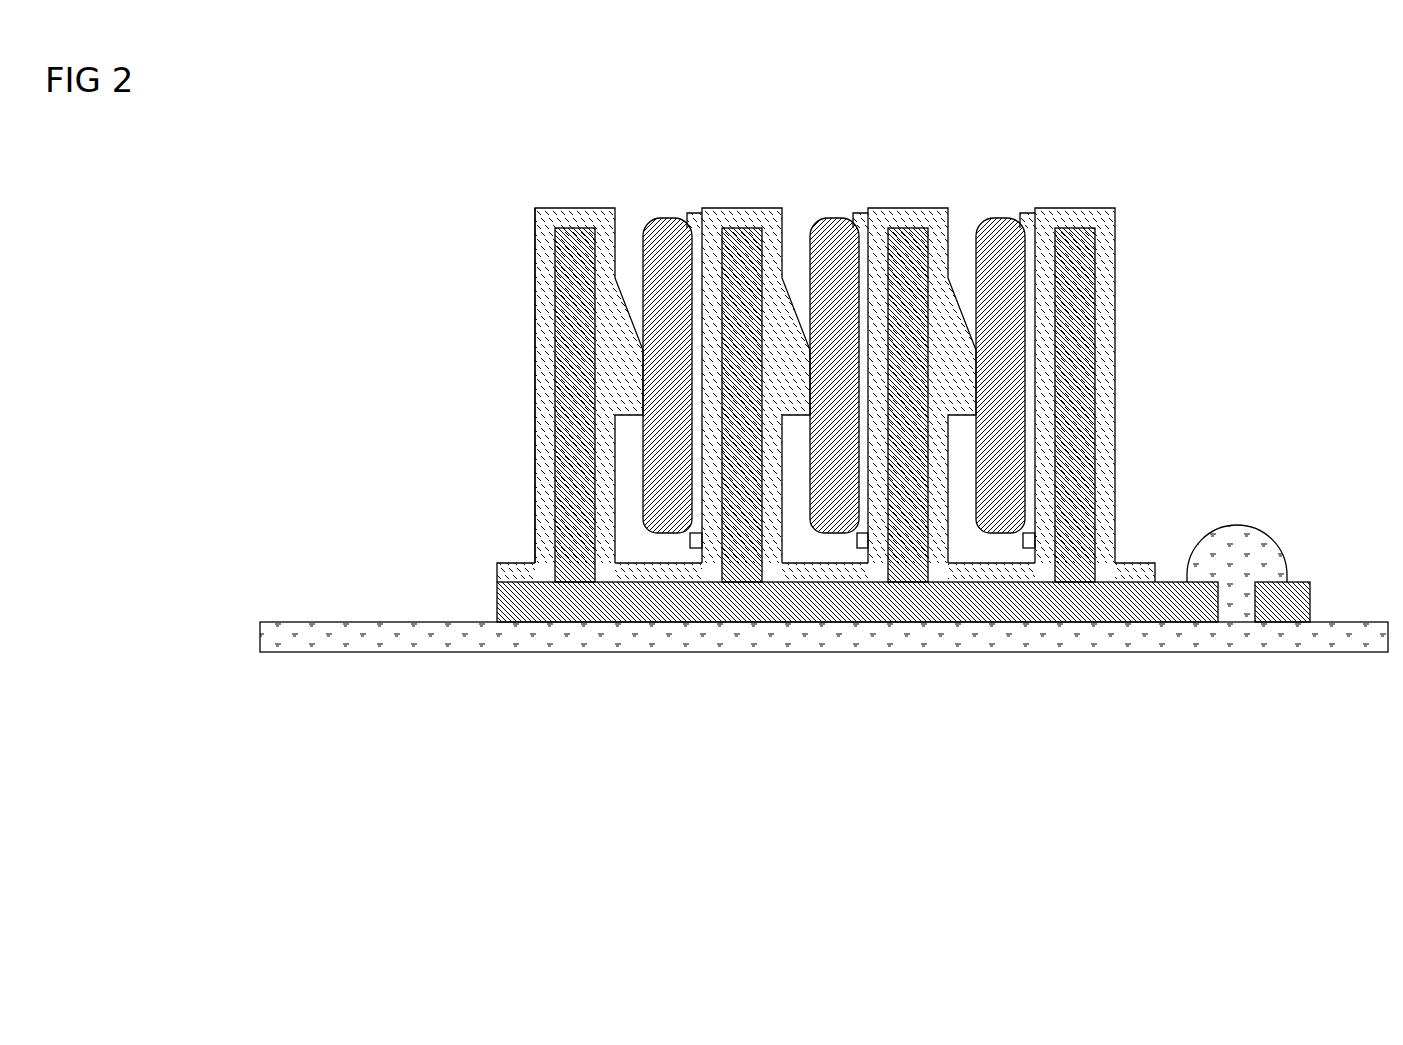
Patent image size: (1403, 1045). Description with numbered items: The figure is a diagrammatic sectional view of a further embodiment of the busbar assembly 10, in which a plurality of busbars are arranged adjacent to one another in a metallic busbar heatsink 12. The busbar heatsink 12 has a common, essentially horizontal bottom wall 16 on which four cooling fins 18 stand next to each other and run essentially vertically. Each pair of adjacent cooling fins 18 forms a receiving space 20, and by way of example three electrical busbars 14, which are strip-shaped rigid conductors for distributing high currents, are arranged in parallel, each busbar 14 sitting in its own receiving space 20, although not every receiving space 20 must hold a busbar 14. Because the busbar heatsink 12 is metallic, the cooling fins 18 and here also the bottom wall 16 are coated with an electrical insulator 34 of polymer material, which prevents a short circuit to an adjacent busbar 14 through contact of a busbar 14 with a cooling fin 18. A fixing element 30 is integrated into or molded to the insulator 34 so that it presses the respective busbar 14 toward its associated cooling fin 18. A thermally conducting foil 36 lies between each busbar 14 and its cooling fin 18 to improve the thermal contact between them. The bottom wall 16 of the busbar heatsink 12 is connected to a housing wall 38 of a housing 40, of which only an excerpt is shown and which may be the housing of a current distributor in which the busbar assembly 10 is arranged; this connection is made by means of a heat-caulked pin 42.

The busbar assembly 10 is at (869, 440).
The busbar heatsink 12 is at (553, 613).
The electrical busbar 14 is at (819, 427).
The bottom wall 16 is at (1143, 597).
The cooling fin 18 is at (577, 253).
The receiving space 20 is at (640, 218).
The fixing element 30 is at (610, 352).
The electrical insulator 34 is at (537, 361).
The thermally conducting foil 36 is at (694, 530).
The housing wall 38 is at (421, 630).
The housing 40 is at (796, 440).
The heat-caulked pin 42 is at (1245, 562).